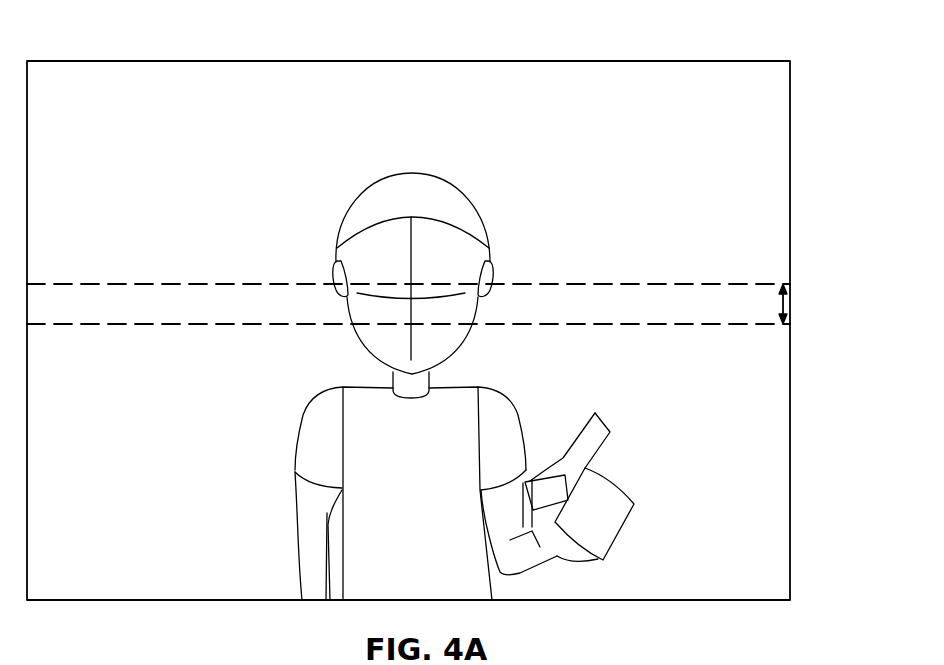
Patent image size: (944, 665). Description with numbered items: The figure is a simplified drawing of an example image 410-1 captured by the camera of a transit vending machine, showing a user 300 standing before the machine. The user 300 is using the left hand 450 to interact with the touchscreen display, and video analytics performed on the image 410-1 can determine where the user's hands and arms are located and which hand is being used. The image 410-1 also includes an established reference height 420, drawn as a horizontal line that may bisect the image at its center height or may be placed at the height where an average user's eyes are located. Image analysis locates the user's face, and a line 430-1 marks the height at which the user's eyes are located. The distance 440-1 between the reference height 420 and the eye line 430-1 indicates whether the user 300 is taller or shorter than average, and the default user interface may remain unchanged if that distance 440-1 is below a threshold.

The image 410-1 is at (225, 61).
The line 430-1 is at (761, 283).
The reference height 420 is at (761, 326).
The distance 440-1 is at (786, 298).
The user 300 is at (357, 405).
The left hand 450 is at (634, 504).